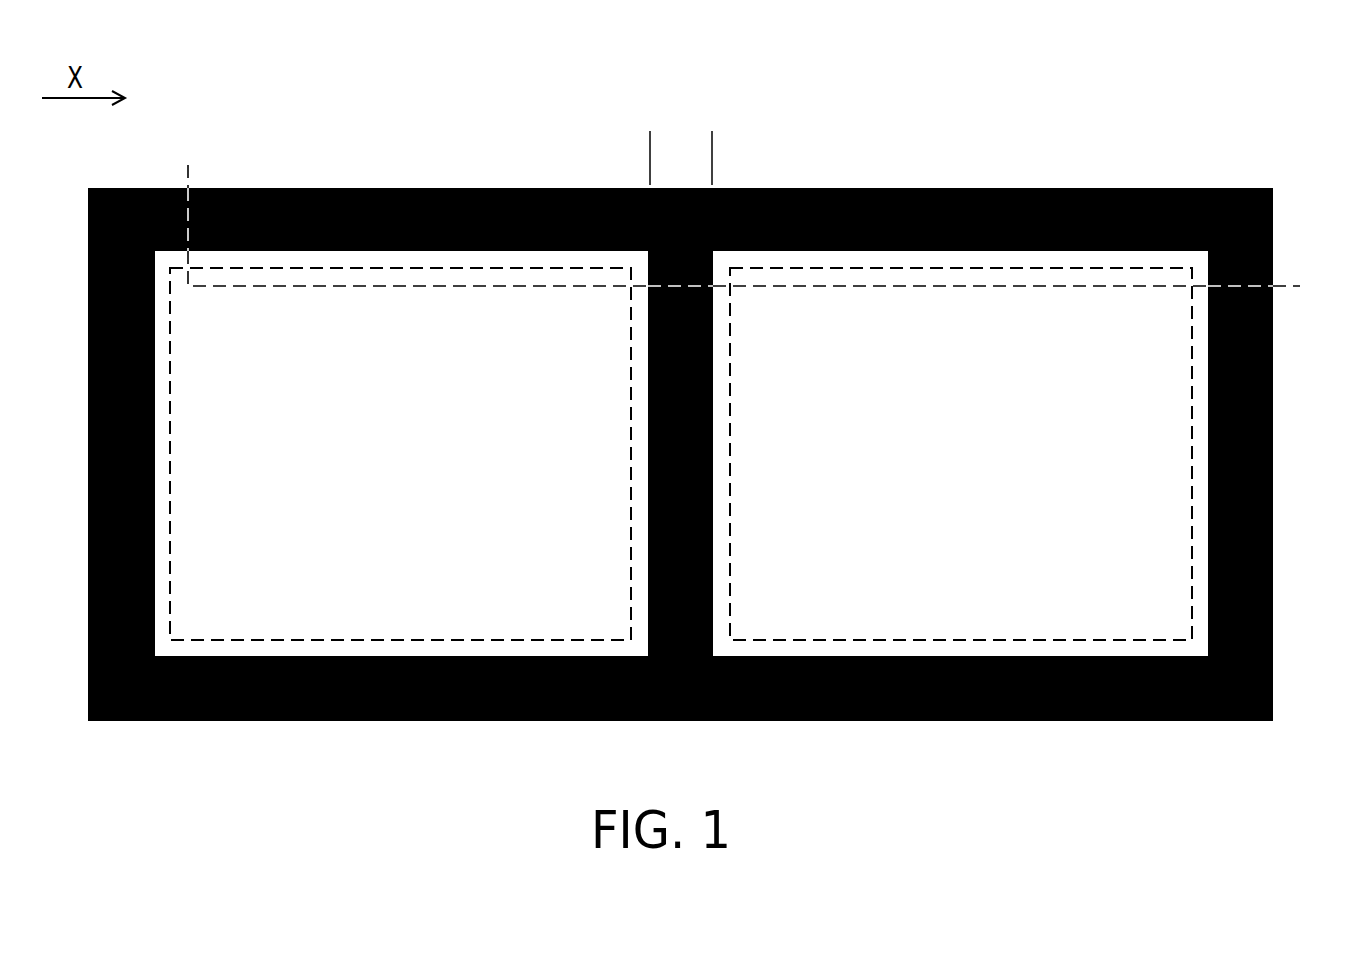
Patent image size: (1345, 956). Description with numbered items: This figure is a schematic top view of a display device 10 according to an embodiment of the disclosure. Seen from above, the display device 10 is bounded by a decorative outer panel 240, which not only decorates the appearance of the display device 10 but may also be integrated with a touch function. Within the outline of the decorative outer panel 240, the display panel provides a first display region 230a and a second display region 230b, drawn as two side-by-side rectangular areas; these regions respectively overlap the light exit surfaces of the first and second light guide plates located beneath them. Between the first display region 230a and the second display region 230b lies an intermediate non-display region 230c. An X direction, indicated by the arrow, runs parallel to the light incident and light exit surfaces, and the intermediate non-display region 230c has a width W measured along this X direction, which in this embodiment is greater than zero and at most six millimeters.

The display device 10 is at (712, 437).
The decorative outer panel 240 is at (1265, 376).
The first display region 230a is at (445, 258).
The second display region 230b is at (900, 258).
The intermediate non-display region 230c is at (642, 135).